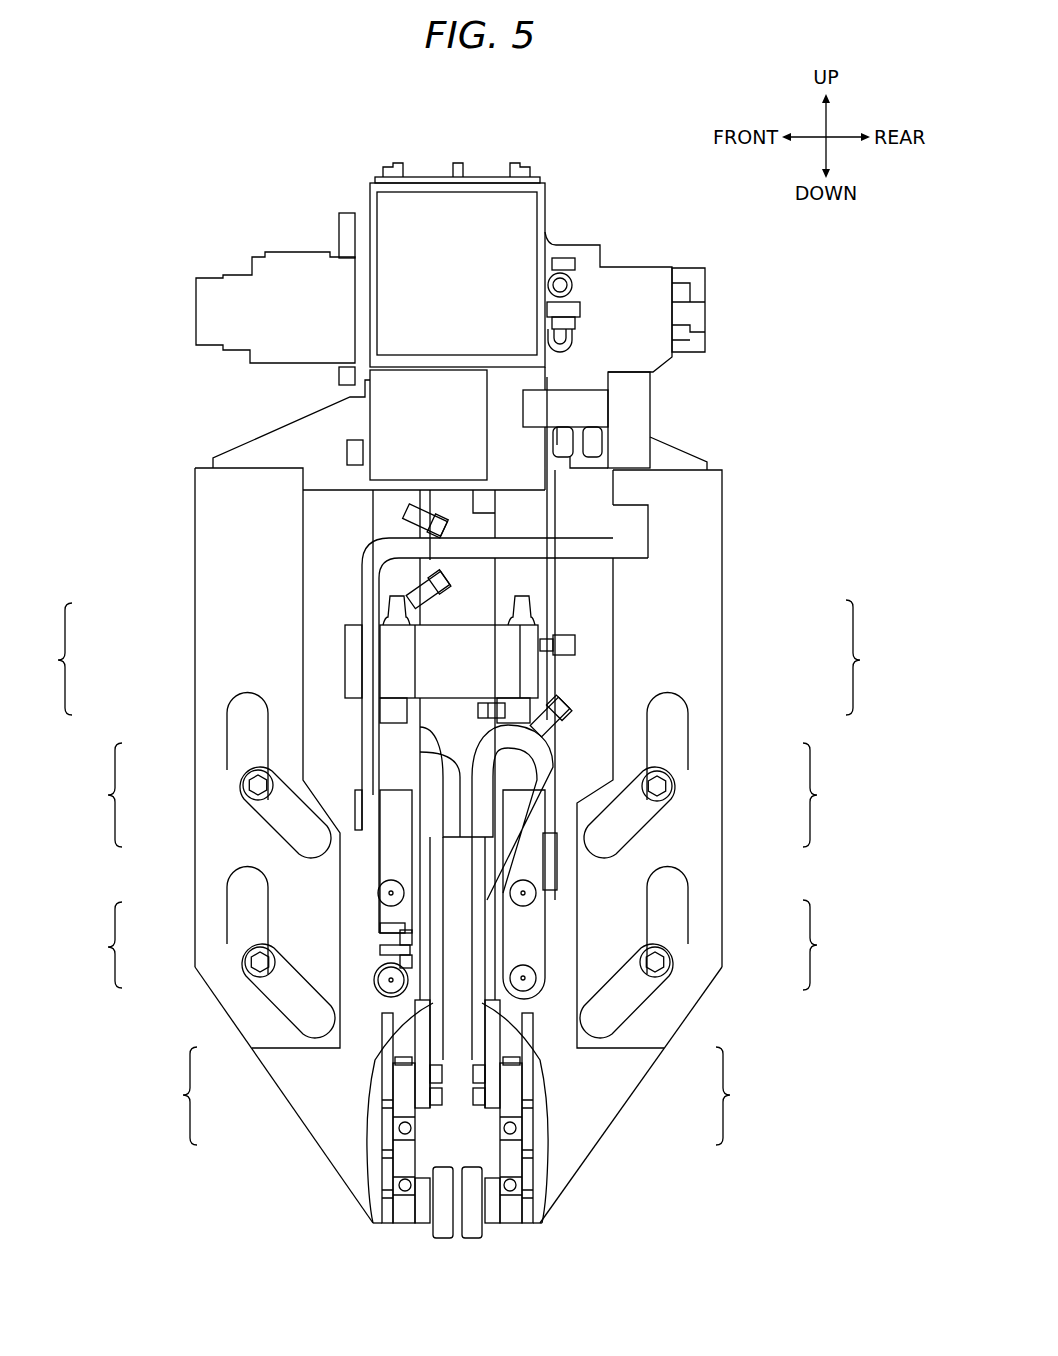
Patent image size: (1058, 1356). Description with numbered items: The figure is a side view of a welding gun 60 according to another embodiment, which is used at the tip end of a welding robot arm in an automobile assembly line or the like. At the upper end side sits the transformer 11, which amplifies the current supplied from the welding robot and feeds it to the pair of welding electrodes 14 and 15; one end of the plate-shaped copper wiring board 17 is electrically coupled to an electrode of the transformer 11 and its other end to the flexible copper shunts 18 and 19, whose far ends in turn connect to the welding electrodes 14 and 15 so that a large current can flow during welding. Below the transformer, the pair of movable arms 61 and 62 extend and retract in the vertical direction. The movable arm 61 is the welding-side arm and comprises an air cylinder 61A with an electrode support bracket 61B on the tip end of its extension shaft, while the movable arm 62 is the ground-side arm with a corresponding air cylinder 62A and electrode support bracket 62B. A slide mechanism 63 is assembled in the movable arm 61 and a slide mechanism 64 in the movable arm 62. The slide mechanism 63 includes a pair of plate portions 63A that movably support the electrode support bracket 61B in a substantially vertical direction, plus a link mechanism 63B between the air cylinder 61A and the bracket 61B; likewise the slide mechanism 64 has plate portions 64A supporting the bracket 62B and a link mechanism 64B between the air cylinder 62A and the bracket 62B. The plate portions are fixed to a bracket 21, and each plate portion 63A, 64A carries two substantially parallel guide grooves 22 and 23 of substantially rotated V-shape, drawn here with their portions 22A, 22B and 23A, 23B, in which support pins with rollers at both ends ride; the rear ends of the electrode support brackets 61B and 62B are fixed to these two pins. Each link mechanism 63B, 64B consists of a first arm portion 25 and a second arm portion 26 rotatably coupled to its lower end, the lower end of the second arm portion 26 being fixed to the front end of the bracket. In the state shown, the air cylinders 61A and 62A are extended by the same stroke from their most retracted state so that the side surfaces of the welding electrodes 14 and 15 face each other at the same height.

The transformer 11 is at (295, 268).
The welding electrode 14 is at (447, 1242).
The welding electrode 15 is at (471, 1242).
The wiring board 17 is at (370, 603).
The shunt 18 is at (373, 1226).
The shunt 19 is at (542, 1226).
The bracket 21 is at (292, 440).
The guide groove 22 is at (106, 795).
The upper clamp slot 22A is at (232, 752).
The upper clamp lever 22B is at (265, 818).
The guide groove 23 is at (106, 947).
The lower clamp slot 23A is at (230, 925).
The lower clamp lever 23B is at (265, 990).
The first arm portion 25 is at (385, 850).
The second arm portion 26 is at (392, 925).
The welding gun 60 is at (462, 126).
The movable arm 61 is at (183, 1095).
The air cylinder 61A is at (423, 1043).
The electrode support bracket 61B is at (342, 1098).
The movable arm 62 is at (730, 1095).
The air cylinder 62A is at (492, 1043).
The electrode support bracket 62B is at (572, 1098).
The slide mechanism 63 is at (58, 660).
The plate portion 63A is at (212, 718).
The link mechanism 63B is at (127, 603).
The slide mechanism 64 is at (862, 660).
The plate portion 64A is at (705, 718).
The link mechanism 64B is at (795, 600).